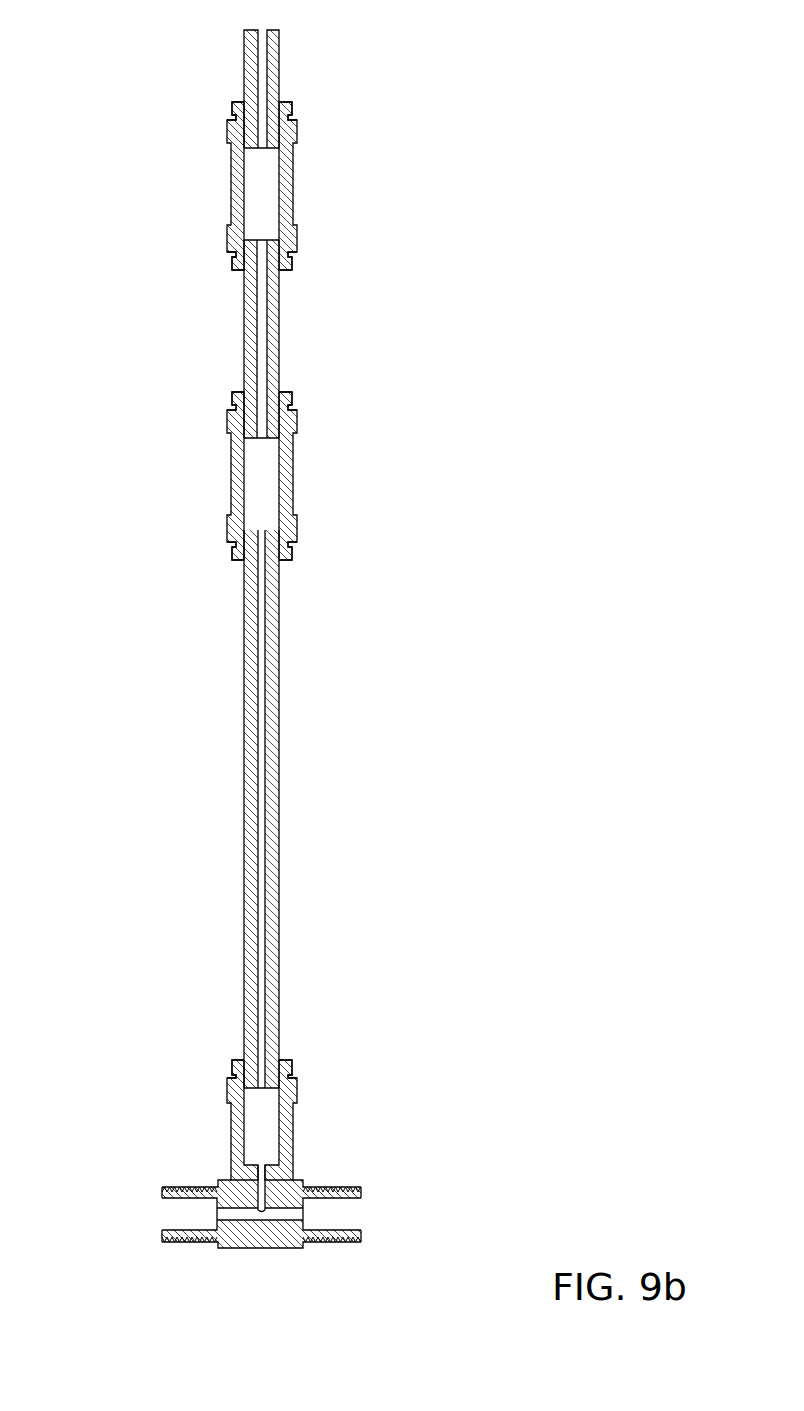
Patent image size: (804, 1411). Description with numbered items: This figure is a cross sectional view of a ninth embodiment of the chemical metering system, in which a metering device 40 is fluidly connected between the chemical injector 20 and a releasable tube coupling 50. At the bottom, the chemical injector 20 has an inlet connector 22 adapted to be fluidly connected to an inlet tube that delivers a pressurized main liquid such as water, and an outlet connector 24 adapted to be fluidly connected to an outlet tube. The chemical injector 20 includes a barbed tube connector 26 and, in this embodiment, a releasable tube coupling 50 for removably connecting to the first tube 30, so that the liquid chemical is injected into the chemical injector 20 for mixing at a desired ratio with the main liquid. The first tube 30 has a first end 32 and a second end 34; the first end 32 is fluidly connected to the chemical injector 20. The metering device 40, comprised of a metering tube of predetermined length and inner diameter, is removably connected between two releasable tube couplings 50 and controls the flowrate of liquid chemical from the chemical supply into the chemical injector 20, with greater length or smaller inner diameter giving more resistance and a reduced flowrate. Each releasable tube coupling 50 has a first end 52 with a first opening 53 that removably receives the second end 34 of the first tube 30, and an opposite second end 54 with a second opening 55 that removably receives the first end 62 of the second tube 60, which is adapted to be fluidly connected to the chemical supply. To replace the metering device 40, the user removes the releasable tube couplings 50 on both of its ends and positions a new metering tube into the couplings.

The chemical injector 20 is at (250, 1259).
The inlet connector 22 is at (162, 1210).
The outlet connector 24 is at (361, 1212).
The barbed tube connector 26 is at (262, 1192).
The first tube 30 is at (280, 332).
The first end of first tube 32 is at (263, 442).
The second end of first tube 34 is at (263, 240).
The metering device 40 is at (280, 730).
The releasable tube coupling 50 is at (313, 196).
The first end of releasable tube coupling 52 is at (238, 272).
The first opening 53 is at (288, 270).
The second end of releasable tube coupling 54 is at (289, 102).
The second opening 55 is at (242, 102).
The second tube 60 is at (280, 73).
The first end of second tube 62 is at (262, 152).